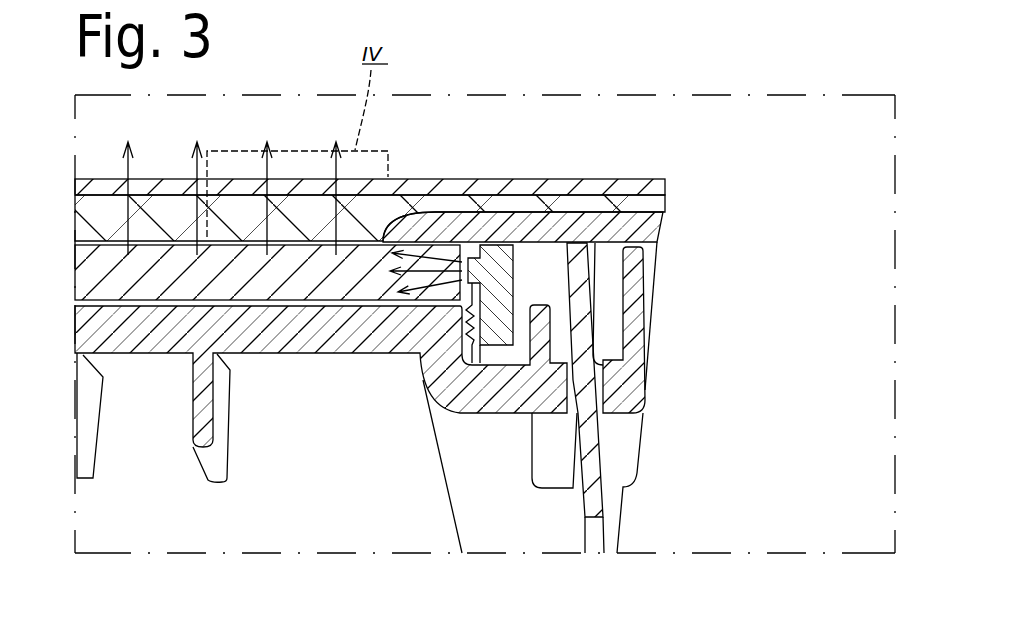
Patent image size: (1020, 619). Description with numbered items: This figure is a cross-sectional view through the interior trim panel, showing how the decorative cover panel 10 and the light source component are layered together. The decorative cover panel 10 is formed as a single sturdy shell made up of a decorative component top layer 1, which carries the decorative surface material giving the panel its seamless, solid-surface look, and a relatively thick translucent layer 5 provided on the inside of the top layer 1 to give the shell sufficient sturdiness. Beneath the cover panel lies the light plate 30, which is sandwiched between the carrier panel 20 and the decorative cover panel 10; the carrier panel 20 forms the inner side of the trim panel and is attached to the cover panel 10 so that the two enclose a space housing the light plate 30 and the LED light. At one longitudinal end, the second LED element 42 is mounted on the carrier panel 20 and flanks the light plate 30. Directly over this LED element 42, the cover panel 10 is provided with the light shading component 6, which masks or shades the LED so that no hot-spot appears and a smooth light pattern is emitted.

The decorative component top layer 1 is at (554, 184).
The translucent layer 5 is at (620, 197).
The light shading component 6 is at (653, 231).
The decorative cover panel 10 is at (757, 146).
The carrier panel 20 is at (560, 392).
The light plate 30 is at (88, 272).
The second LED element 42 is at (500, 300).